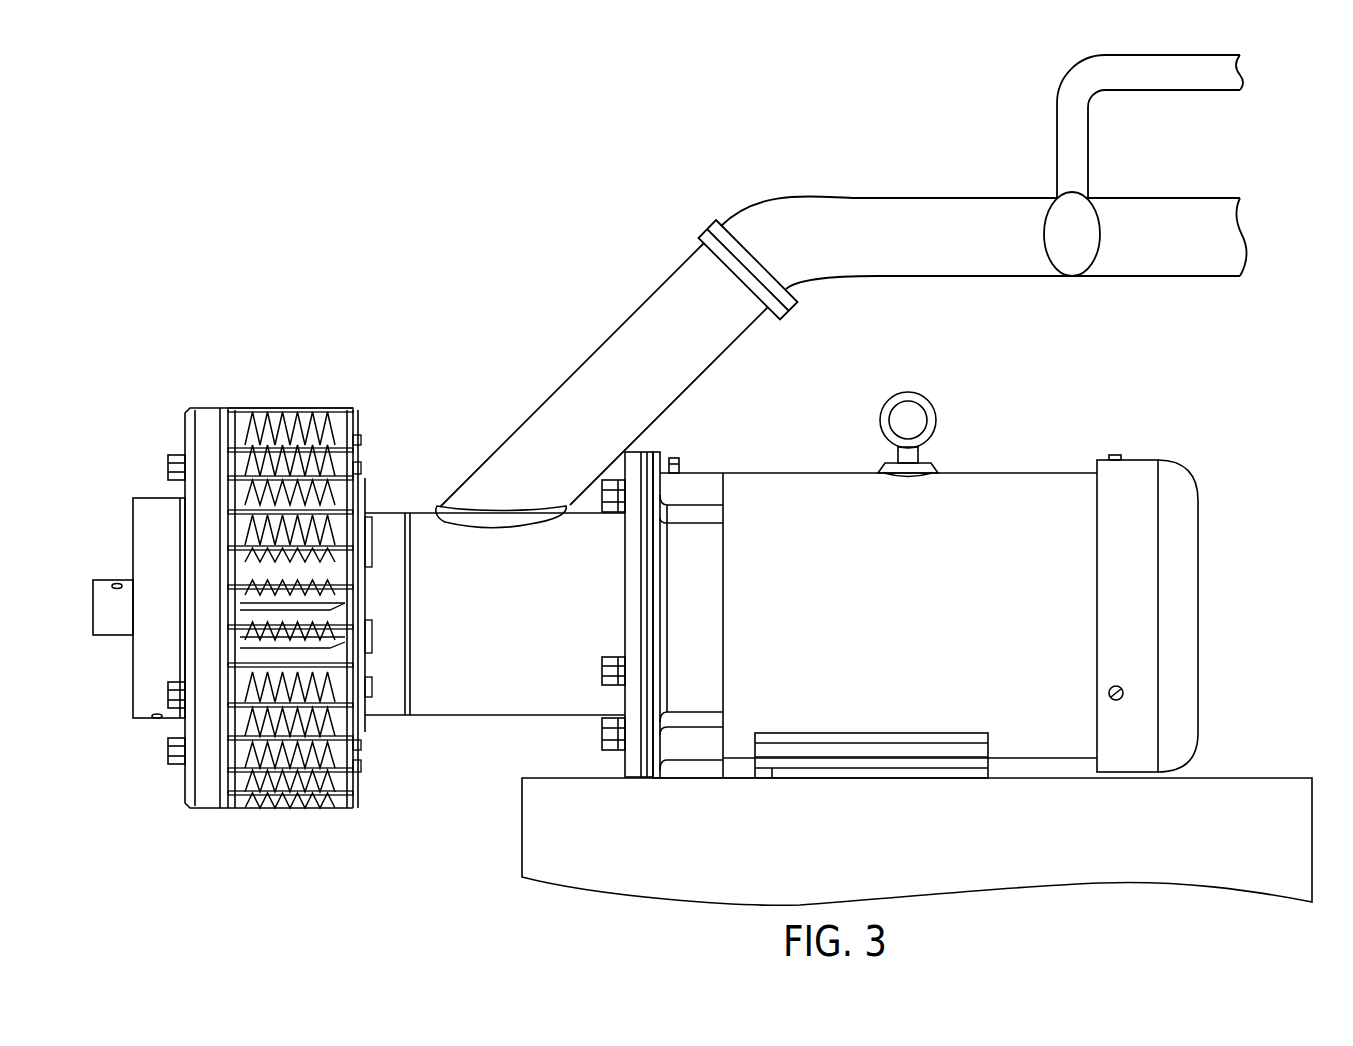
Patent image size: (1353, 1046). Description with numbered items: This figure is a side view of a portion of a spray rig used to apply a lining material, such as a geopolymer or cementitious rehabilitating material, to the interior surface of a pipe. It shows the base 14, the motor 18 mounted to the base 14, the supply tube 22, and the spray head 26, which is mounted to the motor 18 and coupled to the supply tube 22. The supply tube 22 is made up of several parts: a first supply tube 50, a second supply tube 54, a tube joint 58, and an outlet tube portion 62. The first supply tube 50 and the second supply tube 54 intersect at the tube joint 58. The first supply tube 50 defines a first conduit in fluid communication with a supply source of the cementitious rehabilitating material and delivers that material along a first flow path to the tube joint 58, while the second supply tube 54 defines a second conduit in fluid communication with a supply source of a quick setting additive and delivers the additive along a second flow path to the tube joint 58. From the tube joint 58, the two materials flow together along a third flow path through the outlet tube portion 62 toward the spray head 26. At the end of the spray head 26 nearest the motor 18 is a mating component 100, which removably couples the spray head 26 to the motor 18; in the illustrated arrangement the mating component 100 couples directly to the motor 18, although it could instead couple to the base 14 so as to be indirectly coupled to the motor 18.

The base 14 is at (1218, 778).
The motor 18 is at (1003, 490).
The supply tube 22 is at (850, 127).
The spray head 26 is at (512, 613).
The first supply tube 50 is at (1125, 277).
The second supply tube 54 is at (1160, 55).
The tube joint 58 is at (1053, 234).
The outlet tube portion 62 is at (805, 233).
The mating component 100 is at (650, 533).